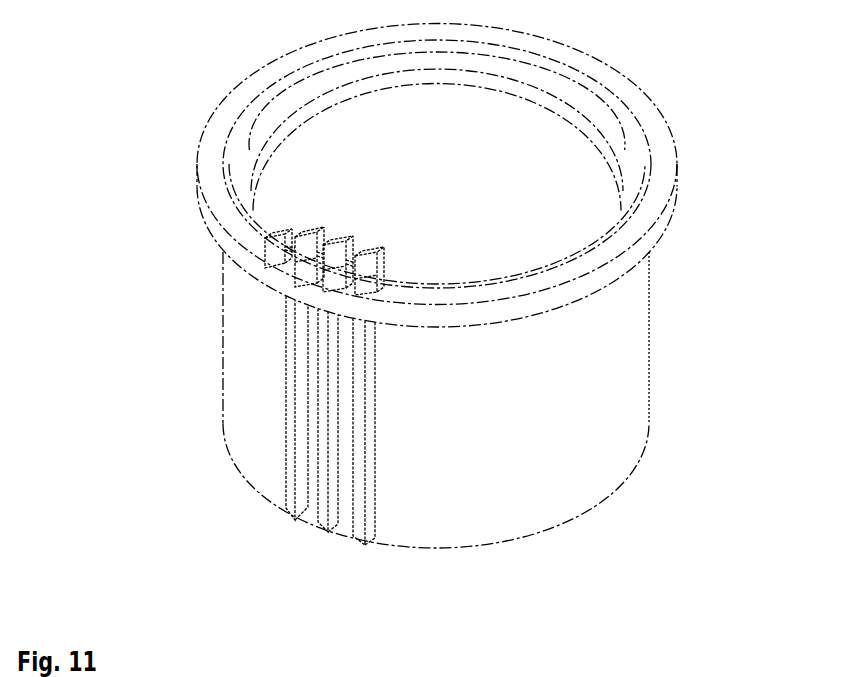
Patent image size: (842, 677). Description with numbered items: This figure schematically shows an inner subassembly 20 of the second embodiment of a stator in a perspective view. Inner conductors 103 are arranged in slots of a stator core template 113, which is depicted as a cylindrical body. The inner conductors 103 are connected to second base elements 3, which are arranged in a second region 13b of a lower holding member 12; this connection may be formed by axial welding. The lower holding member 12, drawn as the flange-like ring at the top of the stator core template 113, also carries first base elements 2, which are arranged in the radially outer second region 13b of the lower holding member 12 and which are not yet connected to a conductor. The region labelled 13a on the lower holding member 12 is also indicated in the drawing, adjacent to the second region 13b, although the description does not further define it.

The inner subassembly 20 is at (182, 83).
The lower holding member 12 is at (660, 174).
The outer annular surface 13a is at (638, 225).
The second region 13b is at (540, 91).
The stator core template 113 is at (592, 372).
The inner conductors 103 is at (365, 472).
The first base elements 2 is at (275, 258).
The second base elements 3 is at (307, 235).